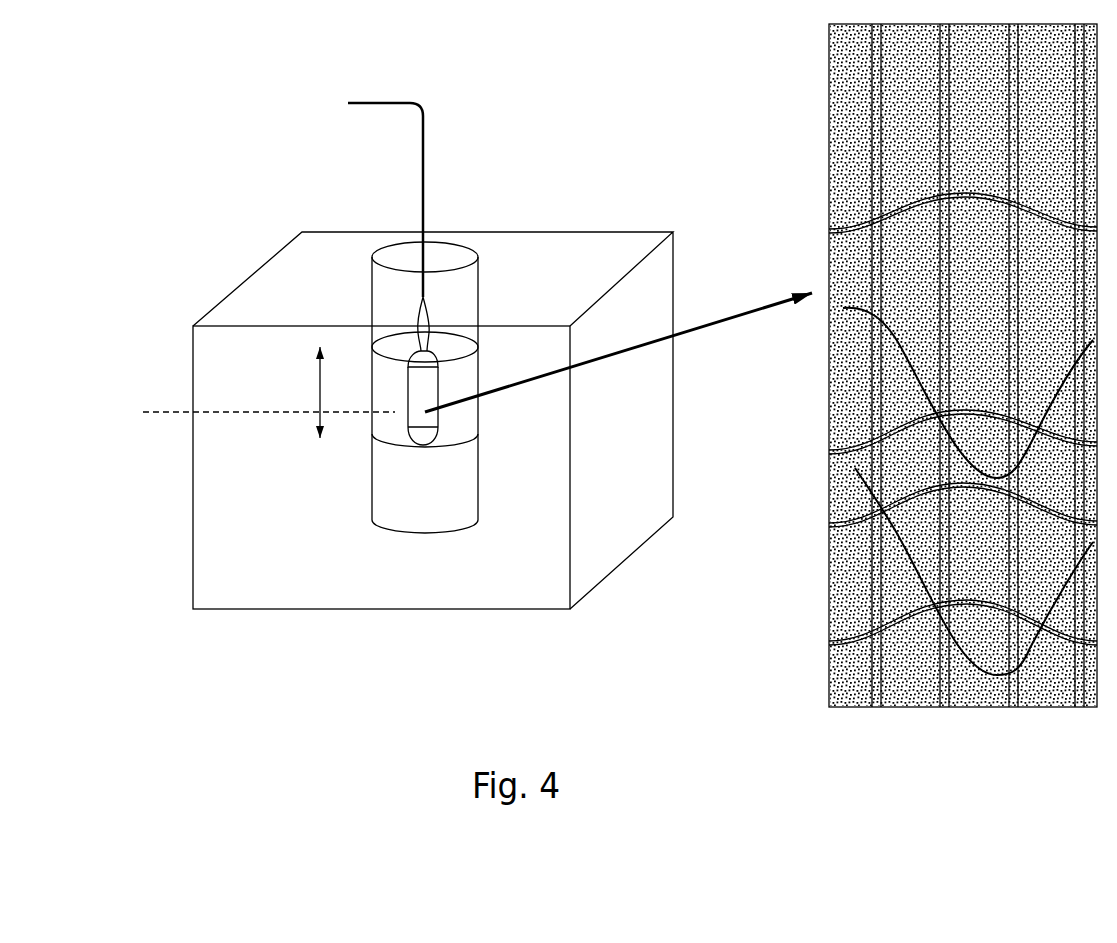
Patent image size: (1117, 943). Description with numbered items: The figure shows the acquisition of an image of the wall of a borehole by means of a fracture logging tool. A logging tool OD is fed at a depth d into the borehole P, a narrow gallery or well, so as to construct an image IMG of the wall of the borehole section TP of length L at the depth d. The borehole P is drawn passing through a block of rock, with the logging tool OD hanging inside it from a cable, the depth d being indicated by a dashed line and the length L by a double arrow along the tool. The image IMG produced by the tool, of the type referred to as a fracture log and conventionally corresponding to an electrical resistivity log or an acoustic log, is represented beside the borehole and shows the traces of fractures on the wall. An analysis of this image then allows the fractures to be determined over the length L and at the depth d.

The borehole P is at (405, 318).
The length of the borehole section L is at (305, 392).
The depth d is at (256, 415).
The borehole section TP is at (372, 452).
The logging tool OD is at (427, 433).
The image IMG is at (827, 703).